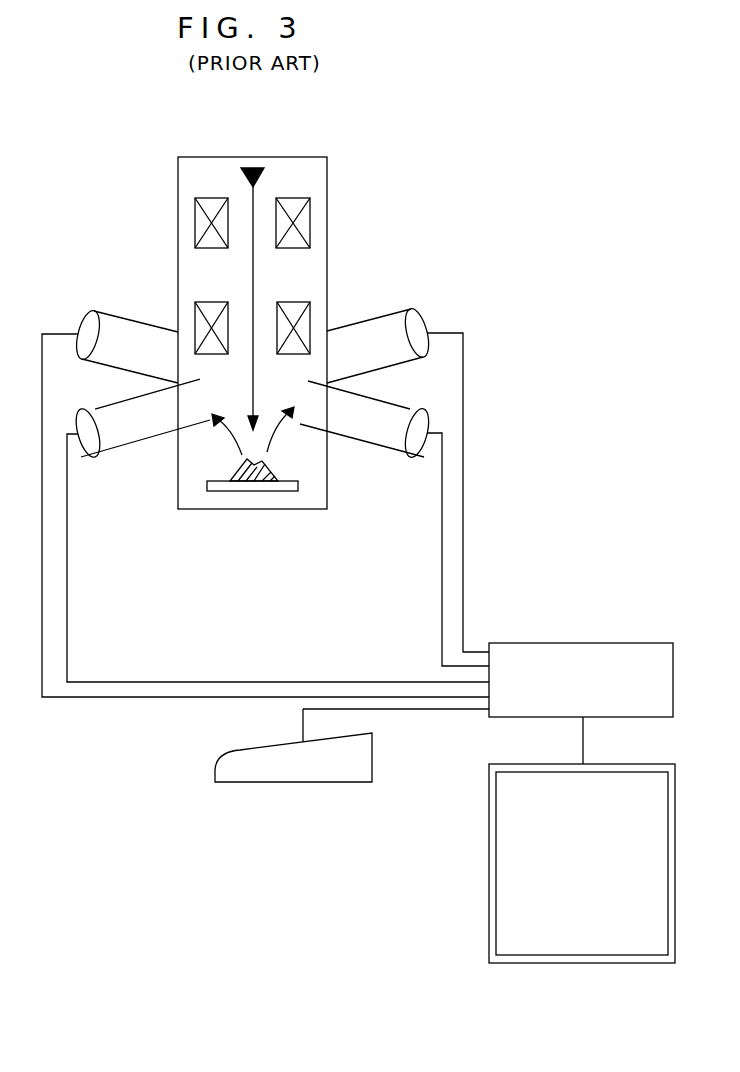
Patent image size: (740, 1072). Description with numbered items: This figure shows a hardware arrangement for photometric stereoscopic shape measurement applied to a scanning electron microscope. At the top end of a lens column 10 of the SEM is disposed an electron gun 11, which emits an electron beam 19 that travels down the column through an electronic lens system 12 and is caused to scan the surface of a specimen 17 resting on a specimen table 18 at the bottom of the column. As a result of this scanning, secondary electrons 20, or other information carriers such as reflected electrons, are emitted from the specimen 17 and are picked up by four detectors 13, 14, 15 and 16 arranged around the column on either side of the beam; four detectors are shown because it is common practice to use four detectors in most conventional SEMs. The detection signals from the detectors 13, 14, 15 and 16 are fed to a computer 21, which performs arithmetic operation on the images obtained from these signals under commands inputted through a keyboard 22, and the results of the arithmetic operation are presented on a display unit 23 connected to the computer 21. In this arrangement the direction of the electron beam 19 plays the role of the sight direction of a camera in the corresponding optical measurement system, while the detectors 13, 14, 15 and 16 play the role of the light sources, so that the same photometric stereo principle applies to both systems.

The lens column 10 is at (327, 160).
The electron gun 11 is at (253, 168).
The electronic lens system 12 is at (293, 248).
The detector 13 is at (373, 316).
The detector 14 is at (386, 448).
The detector 15 is at (134, 319).
The detector 16 is at (133, 446).
The specimen 17 is at (280, 474).
The specimen table 18 is at (256, 491).
The electron beam 19 is at (255, 383).
The secondary electrons 20 is at (238, 443).
The computer 21 is at (579, 643).
The keyboard 22 is at (296, 783).
The display unit 23 is at (489, 873).